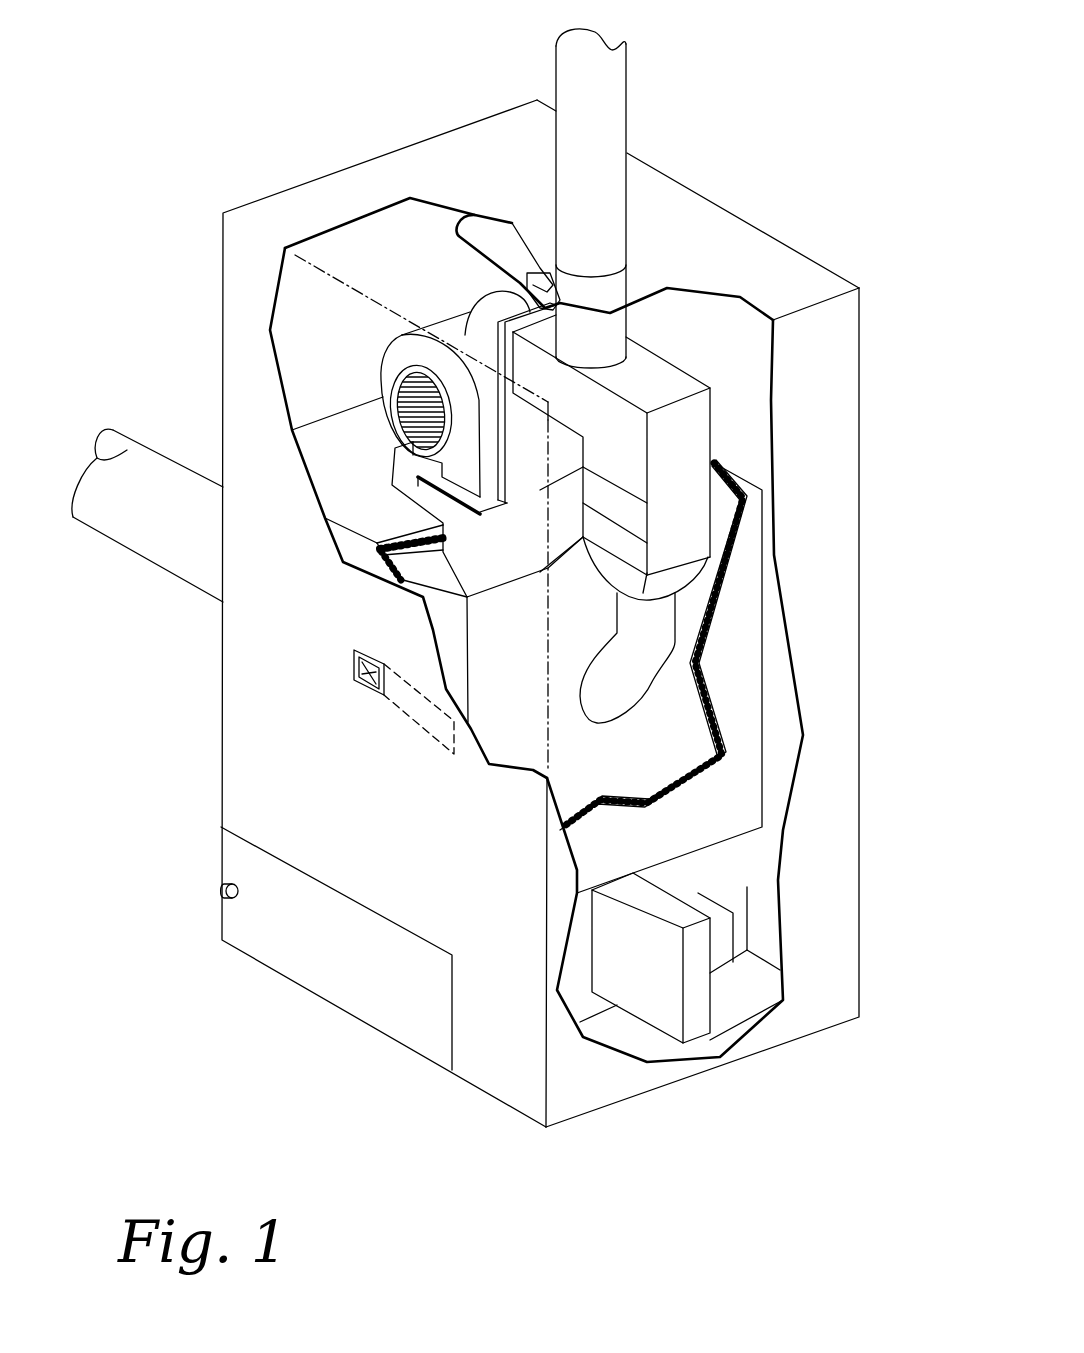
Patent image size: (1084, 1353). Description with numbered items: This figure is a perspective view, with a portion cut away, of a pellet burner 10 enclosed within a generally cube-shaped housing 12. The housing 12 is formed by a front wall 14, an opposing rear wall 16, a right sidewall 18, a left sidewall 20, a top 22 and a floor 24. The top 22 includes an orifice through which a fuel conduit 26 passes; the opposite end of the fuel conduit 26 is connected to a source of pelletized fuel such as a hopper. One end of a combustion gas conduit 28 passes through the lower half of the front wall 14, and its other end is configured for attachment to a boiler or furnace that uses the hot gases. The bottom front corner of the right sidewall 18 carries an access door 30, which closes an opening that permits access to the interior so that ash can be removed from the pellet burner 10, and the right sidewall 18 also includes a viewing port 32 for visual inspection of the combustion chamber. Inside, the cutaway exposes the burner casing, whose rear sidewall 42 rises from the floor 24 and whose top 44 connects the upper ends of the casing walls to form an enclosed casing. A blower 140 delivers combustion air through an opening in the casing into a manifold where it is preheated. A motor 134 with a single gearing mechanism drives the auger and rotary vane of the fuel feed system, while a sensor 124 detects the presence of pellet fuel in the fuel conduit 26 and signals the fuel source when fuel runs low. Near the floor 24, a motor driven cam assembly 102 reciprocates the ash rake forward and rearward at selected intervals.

The pellet burner 10 is at (732, 62).
The housing 12 is at (859, 452).
The front wall 14 is at (315, 344).
The rear wall 16 is at (830, 675).
The right sidewall 18 is at (349, 802).
The left sidewall 20 is at (748, 372).
The top 22 is at (773, 287).
The floor 24 is at (727, 1015).
The fuel conduit 26 is at (618, 80).
The combustion gas conduit 28 is at (155, 490).
The access door 30 is at (332, 964).
The viewing port 32 is at (354, 666).
The rear sidewall 42 is at (642, 749).
The top 44 is at (472, 573).
The motor driven cam assembly 102 is at (702, 877).
The sensor 124 is at (533, 278).
The motor 134 is at (490, 307).
The blower 140 is at (402, 335).